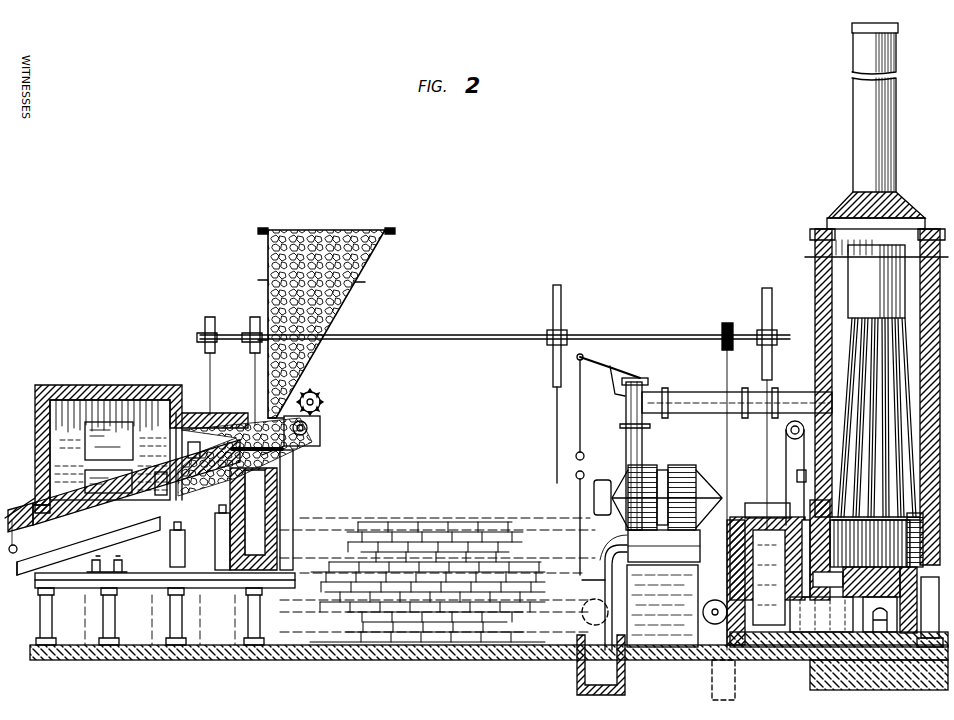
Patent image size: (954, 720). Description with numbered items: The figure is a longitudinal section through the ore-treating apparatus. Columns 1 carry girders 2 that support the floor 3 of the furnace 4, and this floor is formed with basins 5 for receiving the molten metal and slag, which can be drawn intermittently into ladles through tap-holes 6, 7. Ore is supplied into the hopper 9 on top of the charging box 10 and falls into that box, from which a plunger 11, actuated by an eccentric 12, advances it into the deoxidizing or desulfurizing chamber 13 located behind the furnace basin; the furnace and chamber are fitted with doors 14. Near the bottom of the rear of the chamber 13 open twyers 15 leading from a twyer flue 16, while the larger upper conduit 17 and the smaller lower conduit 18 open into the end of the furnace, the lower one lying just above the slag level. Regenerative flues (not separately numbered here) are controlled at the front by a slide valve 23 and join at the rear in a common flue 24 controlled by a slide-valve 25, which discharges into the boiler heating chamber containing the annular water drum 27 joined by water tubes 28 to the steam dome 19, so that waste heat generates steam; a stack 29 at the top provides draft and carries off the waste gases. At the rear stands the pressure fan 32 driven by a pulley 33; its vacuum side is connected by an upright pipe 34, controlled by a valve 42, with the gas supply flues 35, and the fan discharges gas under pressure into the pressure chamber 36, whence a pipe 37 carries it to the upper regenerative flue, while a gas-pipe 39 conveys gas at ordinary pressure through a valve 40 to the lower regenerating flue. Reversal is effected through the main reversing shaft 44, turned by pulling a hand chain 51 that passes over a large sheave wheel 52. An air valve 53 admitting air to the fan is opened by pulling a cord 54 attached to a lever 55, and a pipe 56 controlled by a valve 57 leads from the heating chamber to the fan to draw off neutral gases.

The columns 1 is at (150, 616).
The girders 2 is at (165, 581).
The floor 3 is at (170, 520).
The furnace 4 is at (141, 449).
The basins 5 is at (153, 483).
The tap-hole 6 is at (10, 536).
The tap-hole 7 is at (20, 574).
The hoppers 9 is at (322, 232).
The charging boxes 10 is at (268, 416).
The plungers 11 is at (284, 452).
The eccentrics 12 is at (320, 430).
The deoxidizing or desulfurizing chambers 13 is at (193, 442).
The doors 14 is at (241, 457).
The twyers 15 is at (253, 512).
The twyer flue 16 is at (261, 510).
The upper conduit 17 is at (109, 441).
The lower conduit 18 is at (108, 481).
The steam dome 19 is at (876, 281).
The slide valve 23 is at (214, 533).
The common flue 24 is at (775, 658).
The slide-valve 25 is at (766, 501).
The annular water drum 27 is at (890, 600).
The water tubes 28 is at (888, 360).
The stack 29 is at (853, 126).
The pressure fan 32 is at (662, 466).
The pulley 33 is at (602, 480).
The upright pipe 34 is at (606, 544).
The gas supply flues 35 is at (601, 665).
The pressure chamber 36 is at (664, 533).
The pipe 37 is at (724, 582).
The gas-pipe 39 is at (586, 612).
The valve 40 is at (715, 600).
The valve 42 is at (595, 597).
The main reversing shaft 44 is at (512, 339).
The hand chain 51 is at (557, 483).
The sheave wheel 52 is at (553, 312).
The air valve 53 is at (646, 382).
The cord 54 is at (573, 464).
The lever 55 is at (610, 371).
The pipe 56 is at (716, 392).
The valve 57 is at (767, 415).